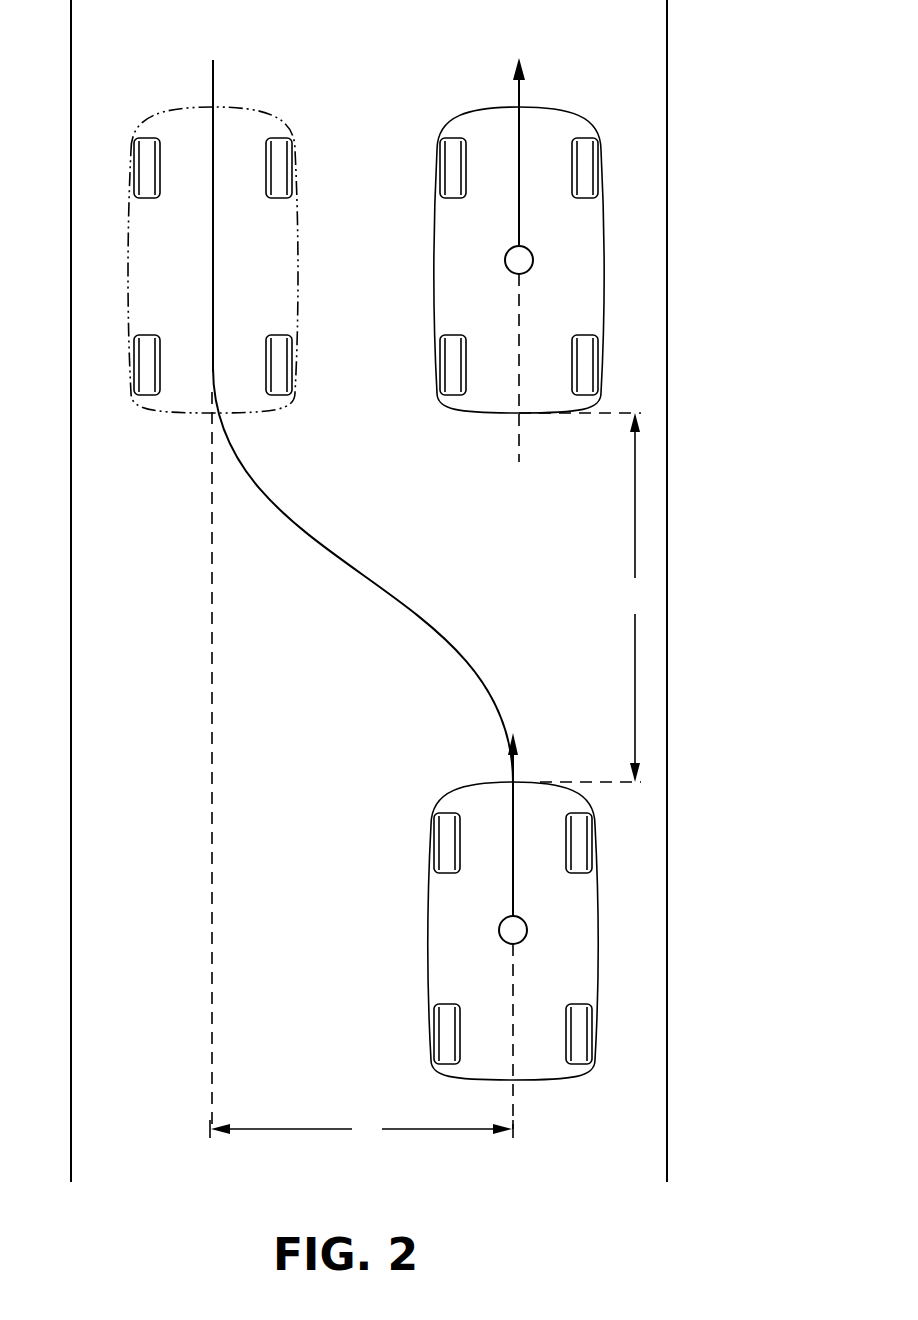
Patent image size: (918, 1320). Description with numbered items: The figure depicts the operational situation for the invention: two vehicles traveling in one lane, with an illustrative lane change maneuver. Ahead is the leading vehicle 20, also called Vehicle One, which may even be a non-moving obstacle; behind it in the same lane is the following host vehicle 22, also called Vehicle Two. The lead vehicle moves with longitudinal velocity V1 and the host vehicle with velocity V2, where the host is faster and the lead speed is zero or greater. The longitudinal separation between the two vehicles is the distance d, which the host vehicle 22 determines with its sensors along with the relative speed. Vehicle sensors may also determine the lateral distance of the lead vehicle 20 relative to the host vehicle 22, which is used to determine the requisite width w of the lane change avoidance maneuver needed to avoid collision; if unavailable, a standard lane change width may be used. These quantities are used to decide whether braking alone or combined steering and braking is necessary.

The leading vehicle 20 is at (598, 260).
The host vehicle 22 is at (593, 931).
The velocity of lead vehicle V1 is at (538, 260).
The velocity of host vehicle V2 is at (532, 931).
The distance between vehicles d is at (580, 597).
The width of lane change avoidance maneuver w is at (361, 1129).